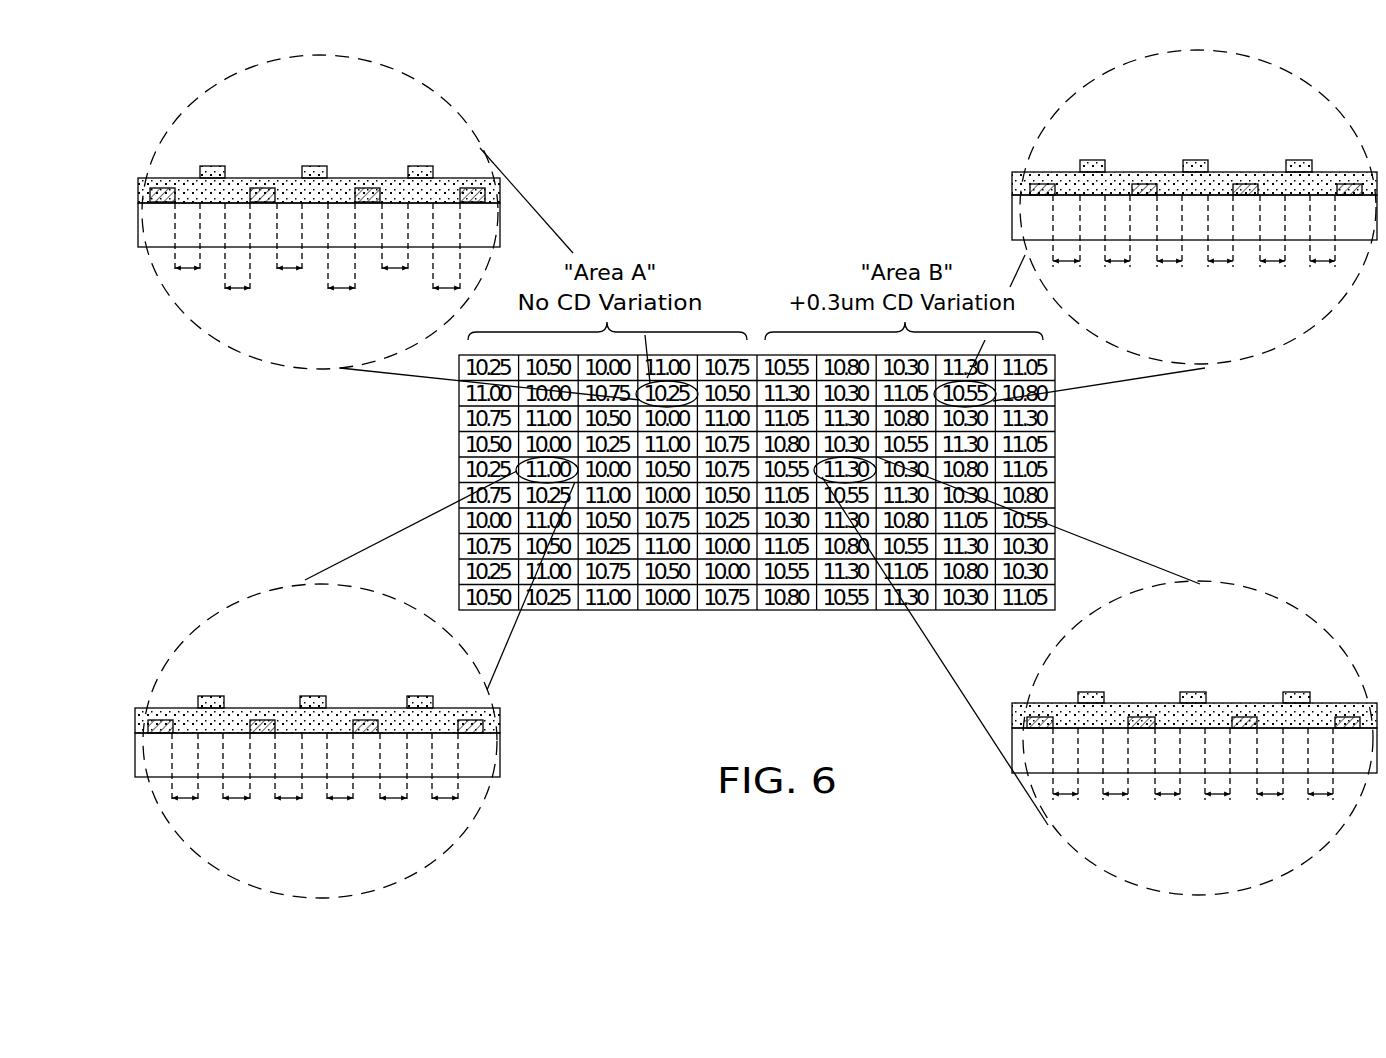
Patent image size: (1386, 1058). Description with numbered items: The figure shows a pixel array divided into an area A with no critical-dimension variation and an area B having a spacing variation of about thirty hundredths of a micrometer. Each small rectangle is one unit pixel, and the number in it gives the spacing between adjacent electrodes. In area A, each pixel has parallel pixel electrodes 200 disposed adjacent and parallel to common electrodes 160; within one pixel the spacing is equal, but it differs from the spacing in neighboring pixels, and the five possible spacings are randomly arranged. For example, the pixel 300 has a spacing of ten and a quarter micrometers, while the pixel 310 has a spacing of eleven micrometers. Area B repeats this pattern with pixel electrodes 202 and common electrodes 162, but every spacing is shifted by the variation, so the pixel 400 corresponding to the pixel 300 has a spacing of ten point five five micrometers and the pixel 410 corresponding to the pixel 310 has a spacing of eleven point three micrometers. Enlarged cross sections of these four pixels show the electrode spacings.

The common electrode 160 is at (366, 188).
The common electrode 162 is at (1245, 183).
The pixel electrode 200 is at (212, 164).
The pixel electrode 202 is at (1091, 158).
The pixel 300 is at (183, 342).
The pixel 310 is at (183, 615).
The pixel 400 is at (1325, 333).
The pixel 410 is at (1325, 610).